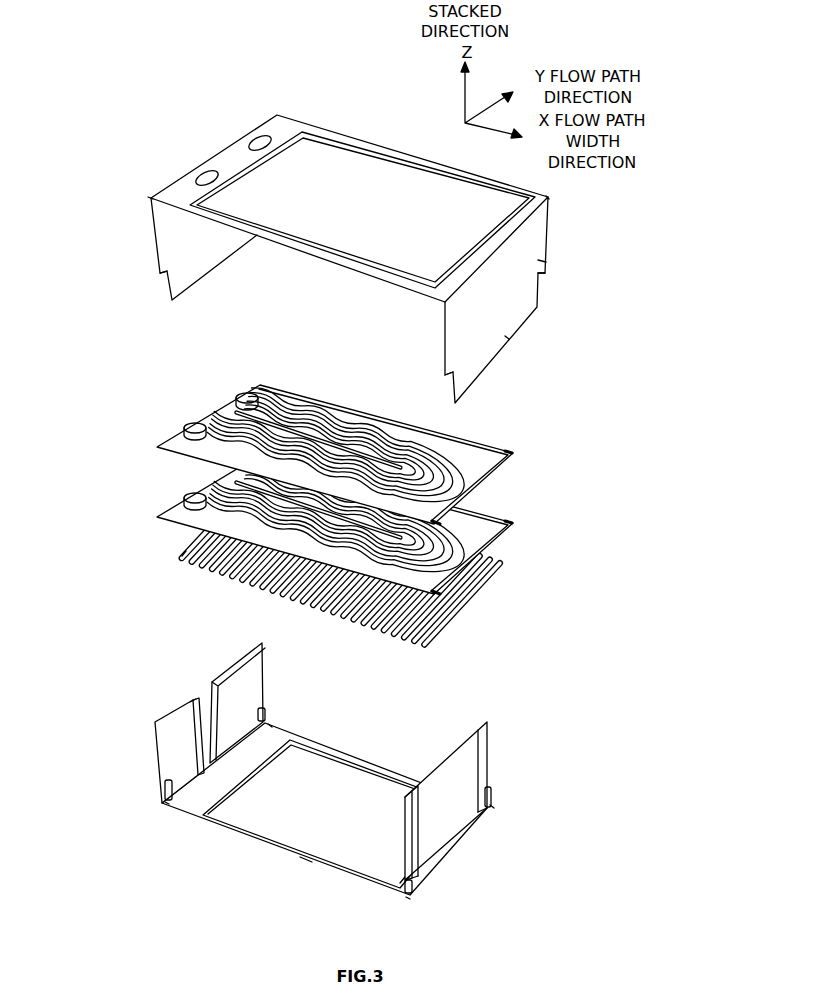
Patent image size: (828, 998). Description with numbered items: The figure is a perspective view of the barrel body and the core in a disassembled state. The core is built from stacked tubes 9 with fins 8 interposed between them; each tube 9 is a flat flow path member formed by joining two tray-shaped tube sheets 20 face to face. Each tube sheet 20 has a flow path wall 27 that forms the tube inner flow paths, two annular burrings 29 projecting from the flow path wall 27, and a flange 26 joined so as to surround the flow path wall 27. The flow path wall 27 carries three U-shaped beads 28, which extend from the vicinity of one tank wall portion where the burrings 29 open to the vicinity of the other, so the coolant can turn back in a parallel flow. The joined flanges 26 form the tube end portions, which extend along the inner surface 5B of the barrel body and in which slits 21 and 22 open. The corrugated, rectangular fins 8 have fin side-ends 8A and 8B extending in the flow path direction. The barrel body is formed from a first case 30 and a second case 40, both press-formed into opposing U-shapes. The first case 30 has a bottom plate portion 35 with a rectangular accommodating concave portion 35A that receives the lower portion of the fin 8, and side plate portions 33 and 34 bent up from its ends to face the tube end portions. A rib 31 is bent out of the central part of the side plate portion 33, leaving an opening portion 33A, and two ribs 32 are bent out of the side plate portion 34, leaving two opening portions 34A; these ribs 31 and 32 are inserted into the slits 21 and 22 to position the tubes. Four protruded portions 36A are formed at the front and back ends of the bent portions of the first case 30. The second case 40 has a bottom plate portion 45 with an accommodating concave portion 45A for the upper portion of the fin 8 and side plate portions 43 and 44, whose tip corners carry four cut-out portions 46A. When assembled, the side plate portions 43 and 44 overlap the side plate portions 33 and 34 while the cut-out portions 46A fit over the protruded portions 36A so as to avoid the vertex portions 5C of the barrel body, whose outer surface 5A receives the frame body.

The outer surface 5A is at (540, 253).
The inner surface 5B is at (307, 863).
The vertex portions 5C is at (150, 197).
The fins 8 is at (346, 561).
The fin side-end 8A is at (195, 568).
The fin side-end 8B is at (460, 615).
The tube 9 is at (346, 465).
The tube sheet 20 is at (346, 430).
The slit 21 is at (346, 490).
The slit 22 is at (403, 447).
The flange 26 is at (215, 527).
The flow path wall 27 is at (242, 506).
The beads 28 is at (319, 440).
The burrings 29 is at (250, 393).
The first case 30 is at (324, 795).
The rib 31 is at (179, 723).
The ribs 32 is at (478, 813).
The side plate portion 33 is at (179, 723).
The opening portion 33A is at (192, 700).
The side plate portion 34 is at (483, 821).
The opening portions 34A is at (438, 880).
The bottom plate portion 35 is at (317, 809).
The accommodating concave portion 35A is at (225, 830).
The protruded portions 36A is at (266, 716).
The second case 40 is at (351, 259).
The side plate portion 43 is at (177, 242).
The side plate portion 44 is at (500, 313).
The bottom plate portion 45 is at (379, 208).
The accommodating concave portion 45A is at (512, 213).
The cut-out portions 46A is at (165, 281).